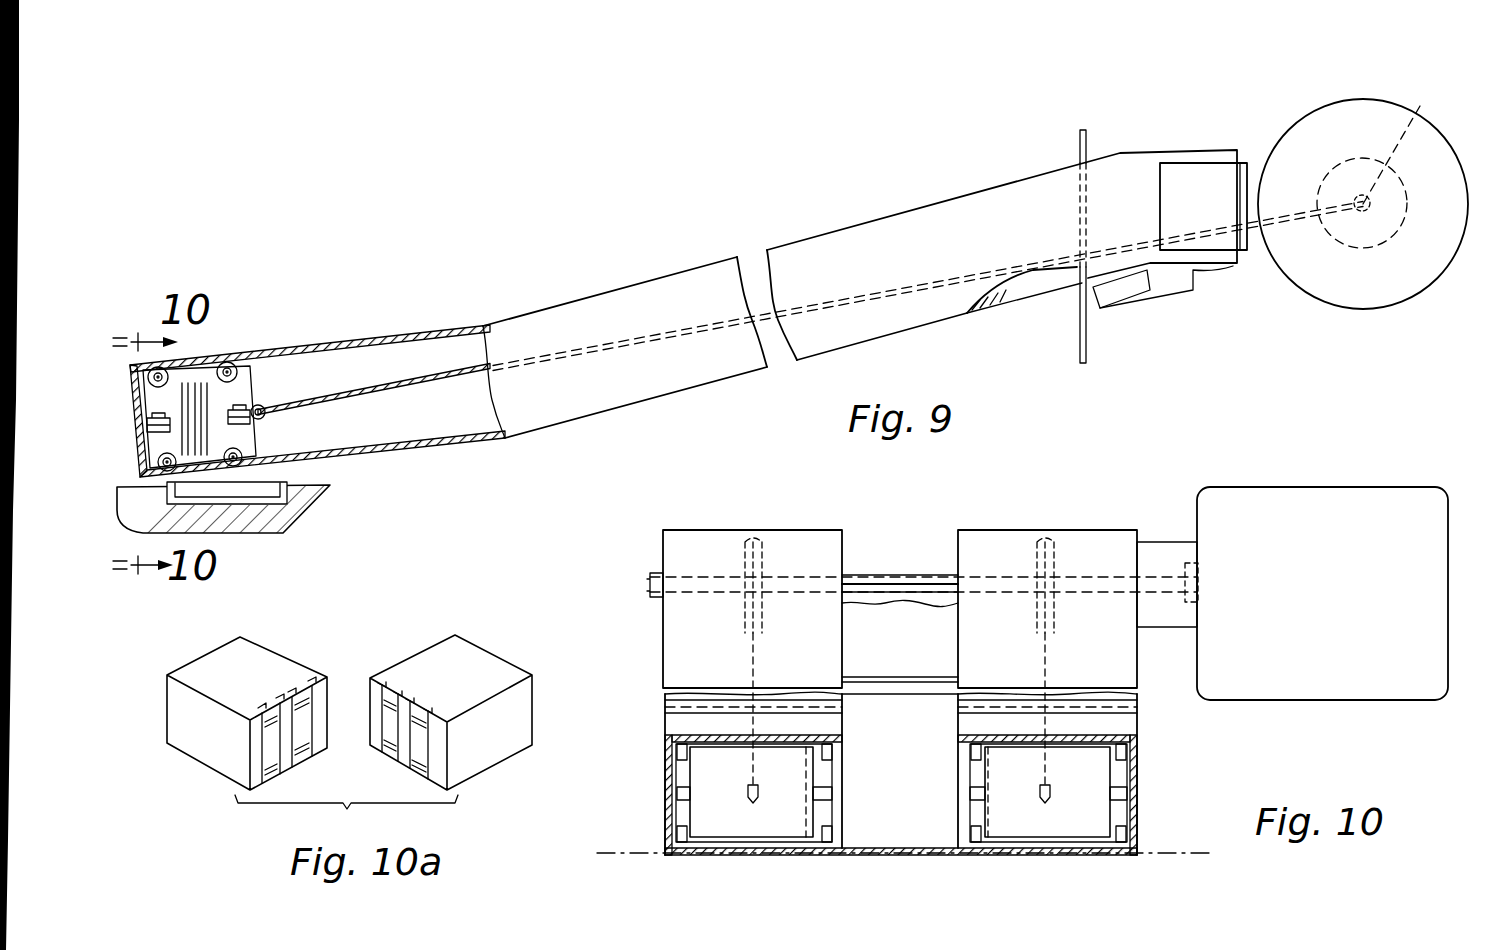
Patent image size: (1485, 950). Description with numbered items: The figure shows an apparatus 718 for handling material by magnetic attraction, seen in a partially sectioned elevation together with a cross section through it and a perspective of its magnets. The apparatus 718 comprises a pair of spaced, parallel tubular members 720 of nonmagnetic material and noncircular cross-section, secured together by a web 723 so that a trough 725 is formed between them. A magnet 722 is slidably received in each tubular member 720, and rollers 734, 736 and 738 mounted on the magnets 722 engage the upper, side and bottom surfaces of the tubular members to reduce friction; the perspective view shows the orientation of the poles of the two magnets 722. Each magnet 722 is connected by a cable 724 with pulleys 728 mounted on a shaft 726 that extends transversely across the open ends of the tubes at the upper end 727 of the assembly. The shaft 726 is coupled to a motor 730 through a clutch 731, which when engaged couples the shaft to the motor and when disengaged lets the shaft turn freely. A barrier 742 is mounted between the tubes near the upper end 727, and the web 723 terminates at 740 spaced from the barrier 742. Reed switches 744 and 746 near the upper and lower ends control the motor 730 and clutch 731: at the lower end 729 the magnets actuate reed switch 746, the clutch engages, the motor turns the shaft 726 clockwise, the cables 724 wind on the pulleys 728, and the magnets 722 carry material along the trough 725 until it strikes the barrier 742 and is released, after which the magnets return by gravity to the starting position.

In FIG. 9, the apparatus 718 is at (650, 278).
In FIG. 9, the tubular member 720 is at (425, 332).
In FIG. 10, the tubular member 720 is at (668, 748).
In FIG. 10, the magnet 722 is at (780, 823).
In FIG. 10A, the magnet 722 is at (255, 662).
In FIG. 9, the web 723 is at (972, 318).
In FIG. 10, the web 723 is at (876, 851).
In FIG. 9, the cable 724 is at (403, 386).
In FIG. 10, the cable 724 is at (750, 648).
In FIG. 9, the trough 725 is at (1004, 288).
In FIG. 10, the trough 725 is at (930, 716).
In FIG. 9, the shaft 726 is at (1352, 215).
In FIG. 10, the shaft 726 is at (858, 578).
In FIG. 9, the upper end 727 is at (1244, 147).
In FIG. 9, the pulley 728 is at (1411, 142).
In FIG. 10, the pulley 728 is at (761, 540).
In FIG. 9, the lower end 729 is at (223, 509).
In FIG. 9, the motor 730 is at (1398, 302).
In FIG. 10, the motor 730 is at (1303, 502).
In FIG. 10, the clutch 731 is at (1200, 581).
In FIG. 9, the rollers 734 is at (242, 350).
In FIG. 10, the rollers 734 is at (1120, 762).
In FIG. 9, the rollers 736 is at (246, 456).
In FIG. 10, the rollers 736 is at (680, 850).
In FIG. 9, the rollers 738 is at (262, 408).
In FIG. 10, the rollers 738 is at (838, 792).
In FIG. 9, the web termination 740 is at (1020, 296).
In FIG. 10, the web termination 740 is at (868, 678).
In FIG. 9, the barrier 742 is at (1090, 346).
In FIG. 10, the barrier 742 is at (900, 606).
In FIG. 9, the reed switch 744 is at (1133, 292).
In FIG. 9, the reed switch 746 is at (233, 532).